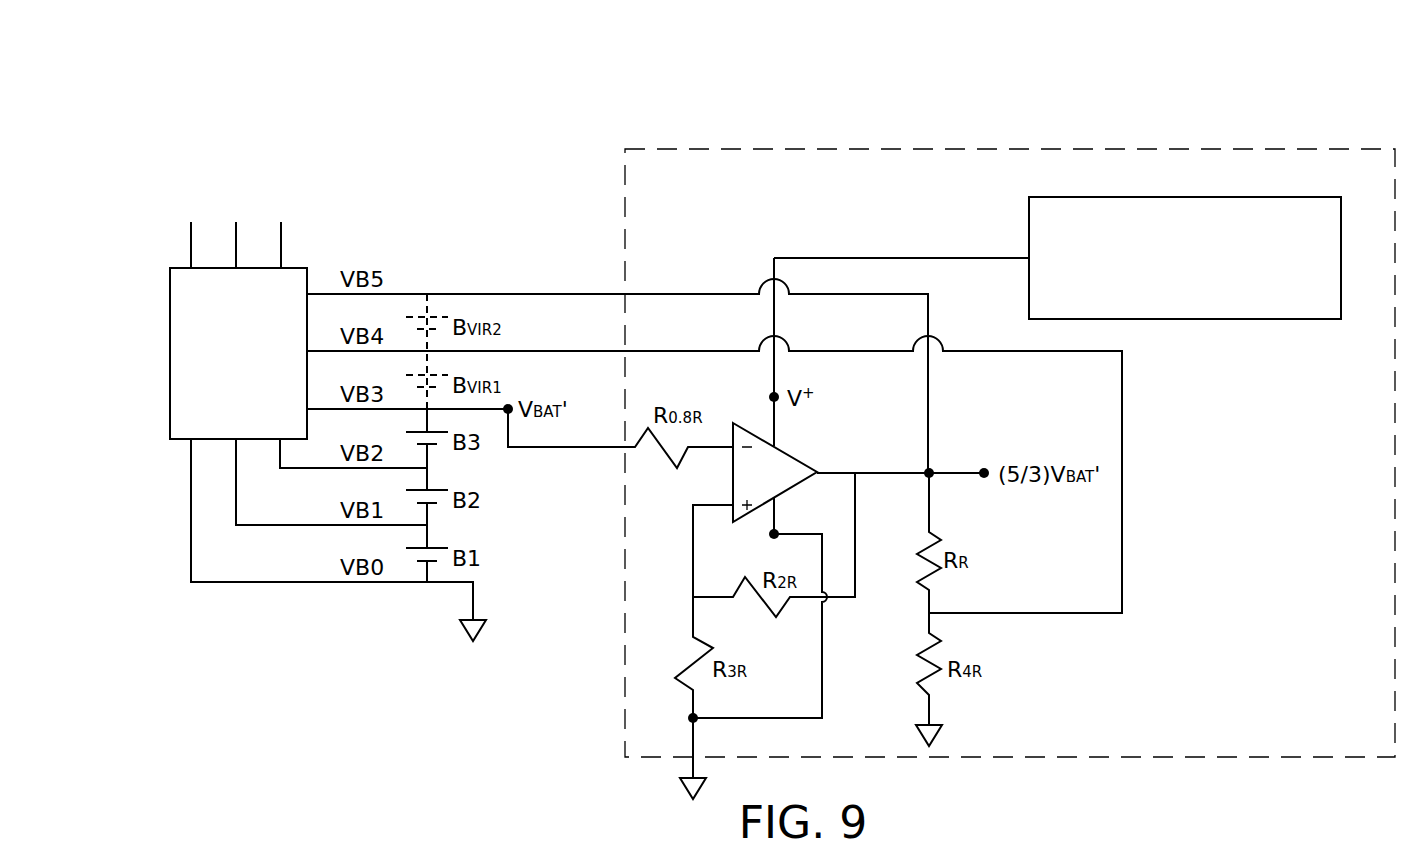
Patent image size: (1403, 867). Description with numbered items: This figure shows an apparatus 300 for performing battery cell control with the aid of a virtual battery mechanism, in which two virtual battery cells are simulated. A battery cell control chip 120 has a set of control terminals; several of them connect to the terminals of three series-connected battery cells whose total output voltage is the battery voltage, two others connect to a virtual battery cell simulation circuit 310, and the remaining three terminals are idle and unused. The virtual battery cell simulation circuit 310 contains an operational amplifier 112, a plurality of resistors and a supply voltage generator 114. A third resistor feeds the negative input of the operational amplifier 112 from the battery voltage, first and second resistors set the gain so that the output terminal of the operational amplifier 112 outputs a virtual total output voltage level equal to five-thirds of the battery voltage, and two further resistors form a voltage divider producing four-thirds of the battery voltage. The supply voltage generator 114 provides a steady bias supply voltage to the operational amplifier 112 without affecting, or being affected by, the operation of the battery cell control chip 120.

The apparatus 300 is at (330, 78).
The virtual battery cell simulation circuit 310 is at (1297, 149).
The battery cell control chip 120 is at (170, 295).
The supply voltage generator 114 is at (1307, 197).
The operational amplifier 112 is at (790, 452).